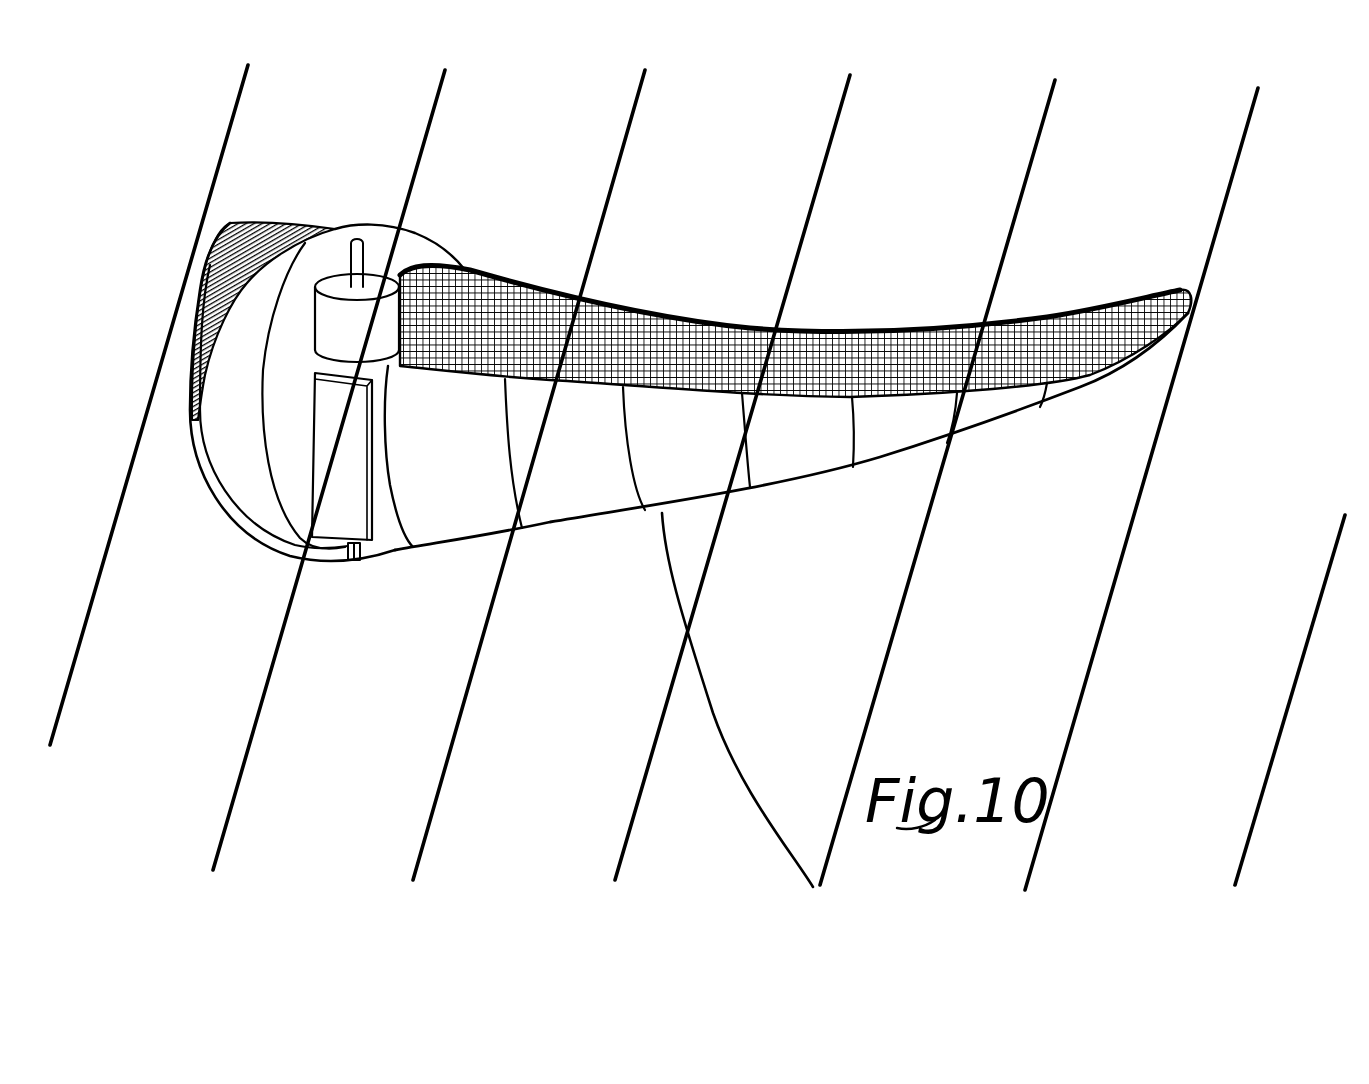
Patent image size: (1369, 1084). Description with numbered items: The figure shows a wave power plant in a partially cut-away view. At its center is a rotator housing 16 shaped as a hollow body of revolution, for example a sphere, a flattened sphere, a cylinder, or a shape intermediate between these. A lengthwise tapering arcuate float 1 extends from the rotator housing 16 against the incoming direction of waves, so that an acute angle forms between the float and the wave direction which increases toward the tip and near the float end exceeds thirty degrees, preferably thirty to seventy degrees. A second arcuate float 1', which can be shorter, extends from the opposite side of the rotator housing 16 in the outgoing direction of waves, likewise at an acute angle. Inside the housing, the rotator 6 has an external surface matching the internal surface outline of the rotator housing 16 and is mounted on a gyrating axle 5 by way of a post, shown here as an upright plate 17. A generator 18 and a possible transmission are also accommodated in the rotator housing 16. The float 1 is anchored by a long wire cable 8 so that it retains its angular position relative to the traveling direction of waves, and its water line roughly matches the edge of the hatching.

The arcuate float 1 is at (793, 399).
The second arcuate float 1' is at (263, 285).
The gyrating axle 5 is at (360, 553).
The rotator 6 is at (243, 455).
The wire cable 8 is at (718, 720).
The rotator housing 16 is at (253, 527).
The housing box 17 is at (337, 520).
The generator 18 is at (385, 283).